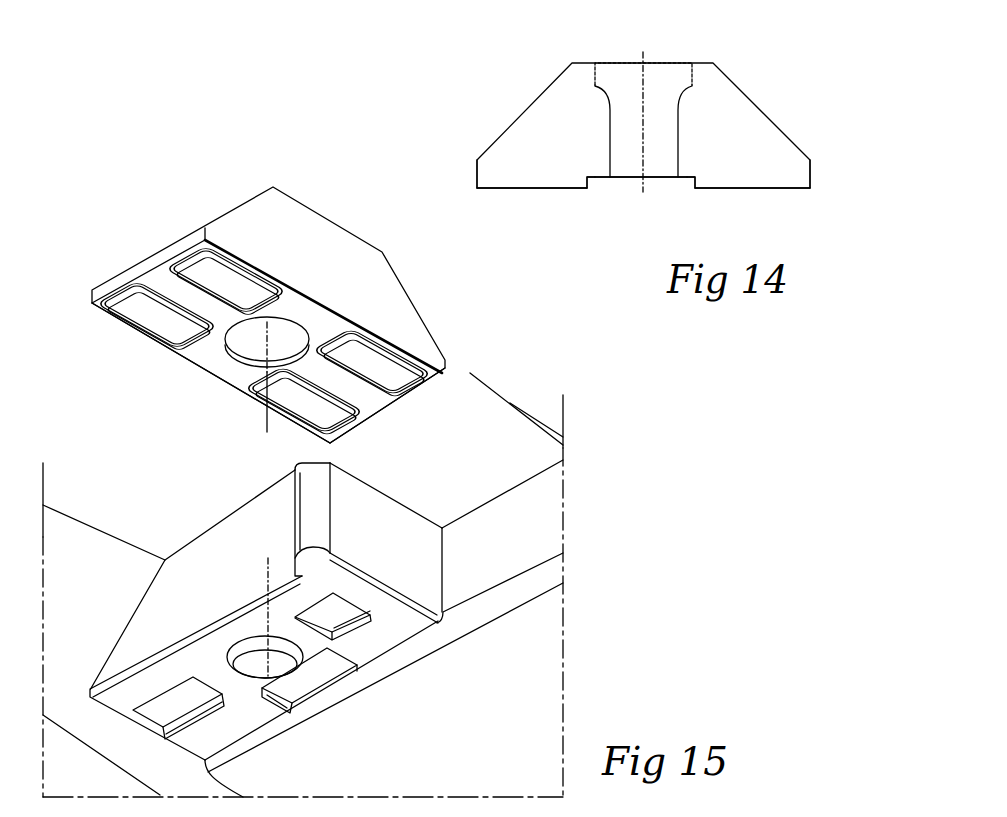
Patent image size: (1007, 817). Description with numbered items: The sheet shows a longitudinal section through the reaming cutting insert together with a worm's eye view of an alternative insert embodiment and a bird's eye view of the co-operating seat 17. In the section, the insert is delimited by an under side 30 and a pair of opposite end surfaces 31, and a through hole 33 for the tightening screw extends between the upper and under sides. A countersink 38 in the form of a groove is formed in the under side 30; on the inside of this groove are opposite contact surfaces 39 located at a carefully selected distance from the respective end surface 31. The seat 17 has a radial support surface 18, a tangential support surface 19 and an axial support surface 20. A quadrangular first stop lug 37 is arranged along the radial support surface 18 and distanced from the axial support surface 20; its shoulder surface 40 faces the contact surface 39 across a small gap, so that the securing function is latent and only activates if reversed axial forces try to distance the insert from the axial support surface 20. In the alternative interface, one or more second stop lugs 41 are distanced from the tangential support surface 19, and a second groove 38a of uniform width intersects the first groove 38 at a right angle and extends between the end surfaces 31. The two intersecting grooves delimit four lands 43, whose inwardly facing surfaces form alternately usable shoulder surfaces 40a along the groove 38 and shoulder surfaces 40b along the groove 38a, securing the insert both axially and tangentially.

In FIG. 15, the seat 17 is at (246, 522).
In FIG. 15, the radial support surface 18 is at (191, 667).
In FIG. 15, the tangential support surface 19 is at (203, 589).
In FIG. 15, the axial support surface 20 is at (400, 572).
In FIG. 14, the under side 30 is at (530, 190).
In FIG. 14, the end surfaces 31 is at (473, 172).
In FIG. 14, the through hole 33 is at (663, 97).
In FIG. 15, the stop lug 37 is at (362, 662).
In FIG. 14, the countersink 38 is at (653, 183).
In FIG. 15, the countersink 38 is at (223, 368).
In FIG. 15, the second groove 38a is at (177, 285).
In FIG. 14, the contact surface 39 is at (593, 188).
In FIG. 15, the shoulder surface 40 is at (270, 697).
In FIG. 15, the shoulder surfaces 40a is at (337, 345).
In FIG. 15, the shoulder surfaces 40b is at (367, 397).
In FIG. 15, the second stop lugs 41 is at (346, 598).
In FIG. 15, the lands 43 is at (367, 405).